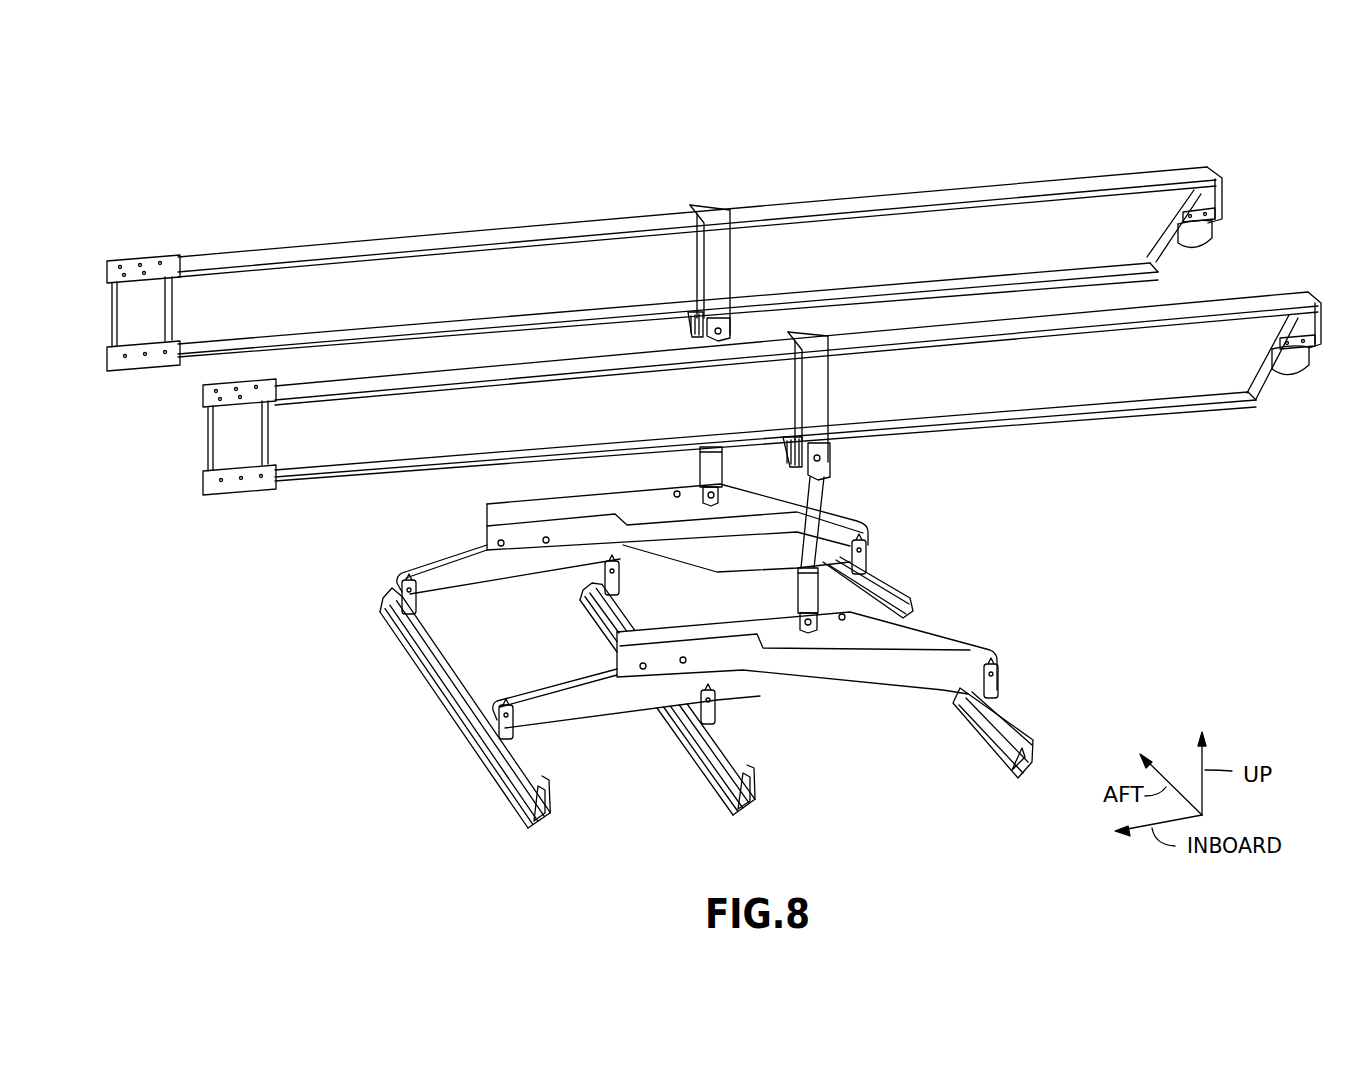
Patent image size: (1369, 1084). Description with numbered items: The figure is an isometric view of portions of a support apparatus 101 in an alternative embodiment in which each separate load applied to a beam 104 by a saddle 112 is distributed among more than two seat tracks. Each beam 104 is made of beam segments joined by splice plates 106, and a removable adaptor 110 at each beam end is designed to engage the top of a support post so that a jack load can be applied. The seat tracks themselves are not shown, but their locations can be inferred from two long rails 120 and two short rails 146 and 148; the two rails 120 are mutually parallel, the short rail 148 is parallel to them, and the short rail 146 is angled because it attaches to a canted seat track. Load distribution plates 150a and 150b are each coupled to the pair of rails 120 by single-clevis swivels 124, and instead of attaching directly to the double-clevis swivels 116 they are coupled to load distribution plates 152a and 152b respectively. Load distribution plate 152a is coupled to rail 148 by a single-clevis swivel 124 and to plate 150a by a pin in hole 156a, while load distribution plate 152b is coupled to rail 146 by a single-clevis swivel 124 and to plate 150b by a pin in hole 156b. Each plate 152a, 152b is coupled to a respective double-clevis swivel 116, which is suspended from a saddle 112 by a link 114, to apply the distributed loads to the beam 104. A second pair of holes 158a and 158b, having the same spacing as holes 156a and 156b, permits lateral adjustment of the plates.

The support apparatus 101 is at (452, 186).
The beam 104 is at (945, 196).
The splice plate 106 is at (157, 262).
The adaptor 110 is at (1215, 233).
The saddle 112 is at (700, 210).
The link rod 114 is at (824, 496).
The double-clevis swivel 116 is at (698, 462).
The long rail 120 is at (510, 785).
The single-clevis swivel 124 is at (622, 584).
The short rail 146 is at (920, 605).
The short rail 148 is at (988, 753).
The load distribution plate 150a is at (603, 710).
The load distribution plate 150b is at (428, 571).
The load distribution plate 152a is at (858, 690).
The load distribution plate 152b is at (868, 520).
The hole 156a is at (498, 538).
The hole 156b is at (546, 544).
The hole 158a is at (672, 494).
The hole 158b is at (845, 620).